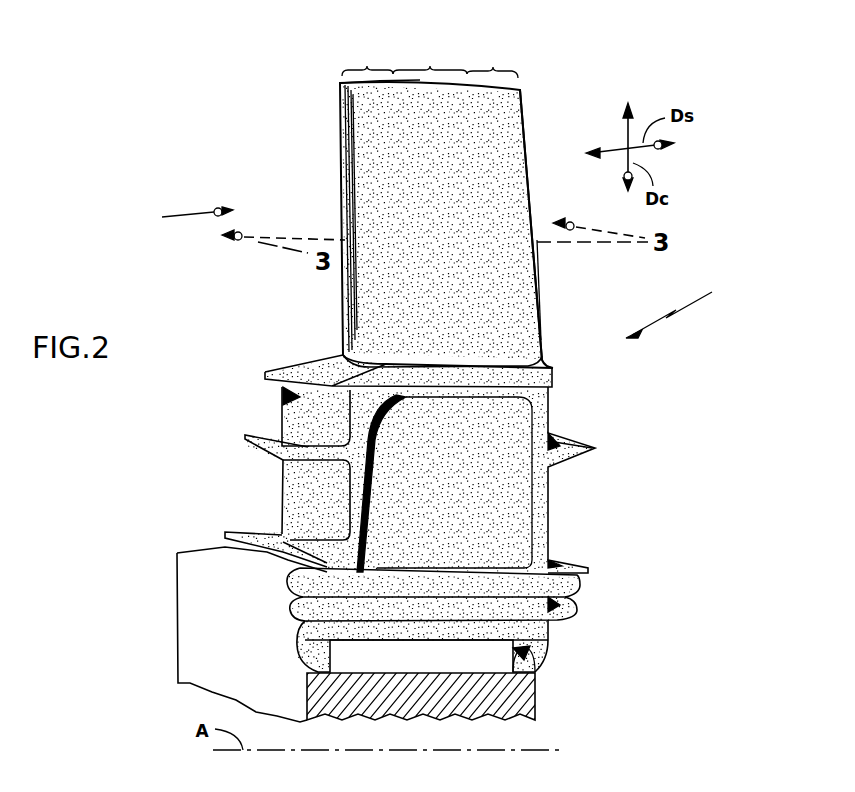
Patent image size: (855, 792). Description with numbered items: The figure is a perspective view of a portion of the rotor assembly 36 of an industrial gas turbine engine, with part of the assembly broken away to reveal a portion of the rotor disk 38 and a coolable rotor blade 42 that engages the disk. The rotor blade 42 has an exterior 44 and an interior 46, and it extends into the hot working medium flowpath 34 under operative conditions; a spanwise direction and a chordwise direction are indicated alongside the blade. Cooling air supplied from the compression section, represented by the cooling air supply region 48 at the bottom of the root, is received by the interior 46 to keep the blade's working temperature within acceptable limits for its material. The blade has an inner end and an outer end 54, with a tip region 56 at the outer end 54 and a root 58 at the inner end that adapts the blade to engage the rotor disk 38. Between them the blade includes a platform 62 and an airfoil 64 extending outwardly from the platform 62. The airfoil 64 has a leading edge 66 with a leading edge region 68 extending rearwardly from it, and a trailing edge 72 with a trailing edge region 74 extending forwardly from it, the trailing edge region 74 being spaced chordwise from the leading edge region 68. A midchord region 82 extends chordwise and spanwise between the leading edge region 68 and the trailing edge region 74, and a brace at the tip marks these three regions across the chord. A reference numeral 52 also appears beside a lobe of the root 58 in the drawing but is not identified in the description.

The hot working medium flowpath 34 is at (192, 213).
The rotor assembly 36 is at (683, 310).
The rotor disk 38 is at (206, 614).
The rotor blade 42 is at (282, 411).
The exterior 44 is at (380, 117).
The interior 46 is at (444, 647).
The cooling air supply region 48 is at (372, 669).
The root lobe 52 is at (563, 620).
The outer end 54 is at (523, 110).
The tip region 56 is at (340, 83).
The root 58 is at (578, 581).
The platform 62 is at (298, 353).
The airfoil 64 is at (436, 255).
The leading edge 66 is at (362, 185).
The leading edge region 68 is at (367, 61).
The trailing edge 72 is at (537, 262).
The trailing edge region 74 is at (492, 62).
The midchord region 82 is at (430, 60).